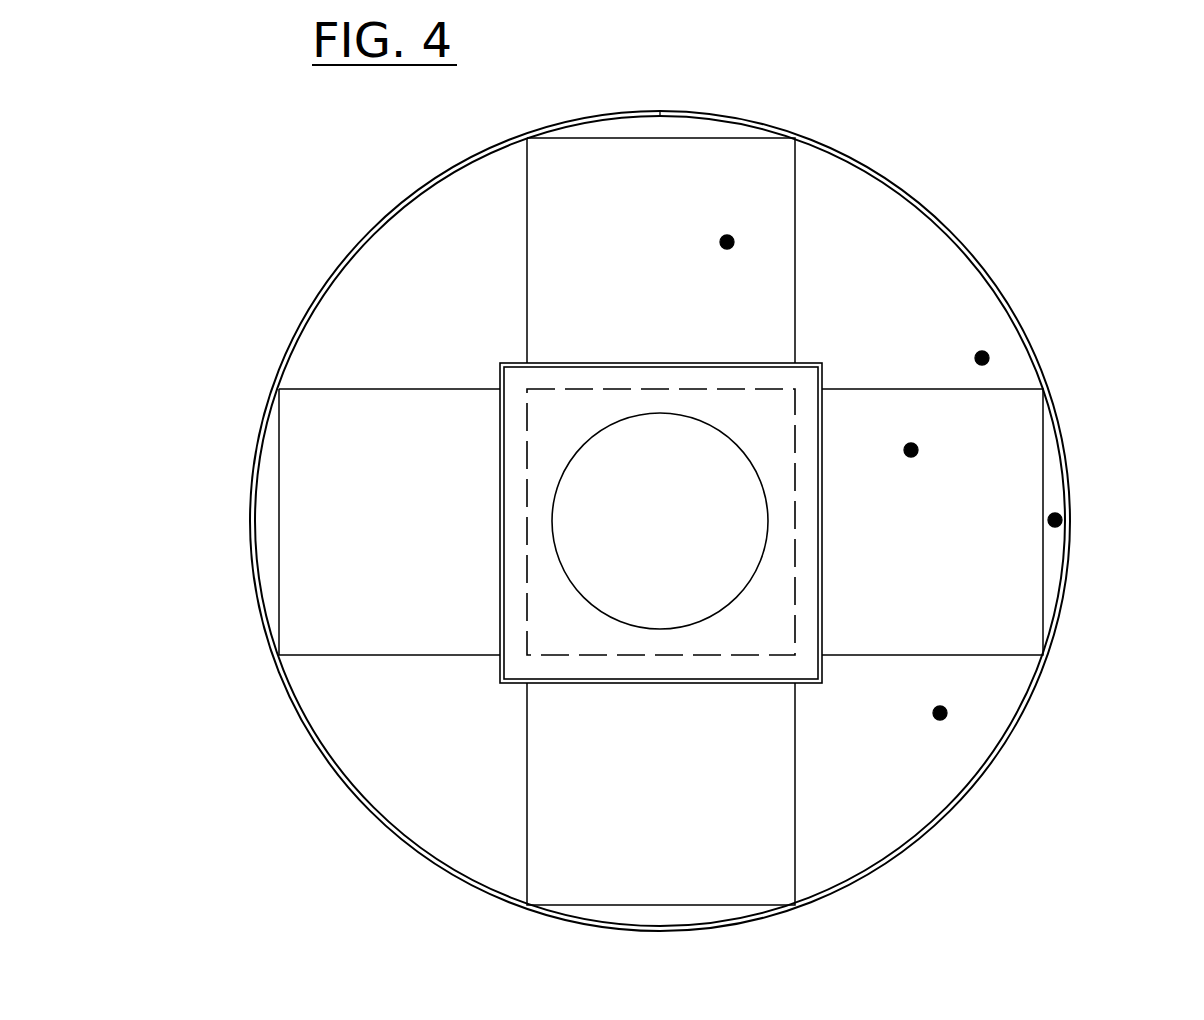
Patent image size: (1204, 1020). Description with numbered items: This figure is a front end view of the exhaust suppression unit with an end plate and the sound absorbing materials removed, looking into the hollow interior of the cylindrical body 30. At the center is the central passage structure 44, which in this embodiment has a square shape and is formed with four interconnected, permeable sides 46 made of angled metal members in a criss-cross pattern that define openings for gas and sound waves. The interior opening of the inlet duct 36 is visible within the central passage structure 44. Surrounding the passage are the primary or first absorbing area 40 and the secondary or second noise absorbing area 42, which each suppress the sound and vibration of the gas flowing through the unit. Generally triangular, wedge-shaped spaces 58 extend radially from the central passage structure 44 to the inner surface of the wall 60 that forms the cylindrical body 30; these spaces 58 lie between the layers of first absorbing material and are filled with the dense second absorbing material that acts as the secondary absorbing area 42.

The cylindrical body 30 is at (330, 767).
The inlet duct 36 is at (587, 442).
The first absorbing area 40 is at (727, 242).
The second noise absorbing area 42 is at (940, 713).
The central passage structure 44 is at (525, 600).
The permeable sides 46 is at (662, 363).
The wedge-shaped spaces 58 is at (416, 267).
The wall 60 is at (288, 688).